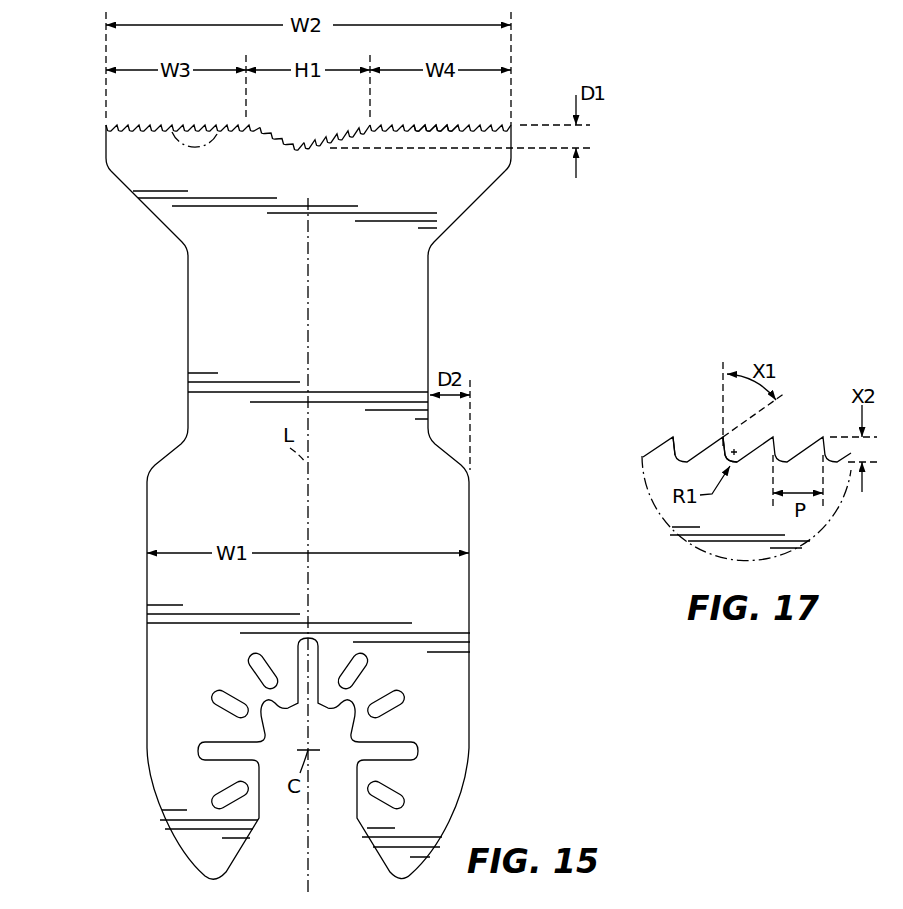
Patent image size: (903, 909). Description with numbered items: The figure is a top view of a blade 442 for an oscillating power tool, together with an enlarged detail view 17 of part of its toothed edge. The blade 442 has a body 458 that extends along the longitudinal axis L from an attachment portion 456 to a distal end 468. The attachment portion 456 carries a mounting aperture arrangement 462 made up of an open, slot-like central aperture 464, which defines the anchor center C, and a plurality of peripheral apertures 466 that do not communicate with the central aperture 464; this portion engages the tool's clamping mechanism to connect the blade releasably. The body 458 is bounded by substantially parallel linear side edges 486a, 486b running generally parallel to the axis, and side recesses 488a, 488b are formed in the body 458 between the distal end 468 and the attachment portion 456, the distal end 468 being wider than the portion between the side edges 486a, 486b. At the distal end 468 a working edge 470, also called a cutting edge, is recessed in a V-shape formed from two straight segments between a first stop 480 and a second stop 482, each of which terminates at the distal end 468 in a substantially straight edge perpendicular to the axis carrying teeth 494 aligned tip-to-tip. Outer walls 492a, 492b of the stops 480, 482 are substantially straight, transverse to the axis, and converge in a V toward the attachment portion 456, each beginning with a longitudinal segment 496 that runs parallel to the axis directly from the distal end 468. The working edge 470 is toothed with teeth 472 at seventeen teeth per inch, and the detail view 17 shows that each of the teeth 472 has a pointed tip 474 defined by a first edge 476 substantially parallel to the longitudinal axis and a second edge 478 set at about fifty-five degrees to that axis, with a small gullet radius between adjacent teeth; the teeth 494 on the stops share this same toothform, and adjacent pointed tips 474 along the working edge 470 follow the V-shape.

In FIG. 15, the blade 442 is at (556, 55).
In FIG. 15, the attachment portion 456 is at (182, 748).
In FIG. 15, the body 458 is at (400, 316).
In FIG. 15, the mounting aperture arrangement 462 is at (418, 715).
In FIG. 15, the central aperture 464 is at (357, 786).
In FIG. 15, the peripheral apertures 466 is at (228, 698).
In FIG. 15, the distal end 468 is at (100, 117).
In FIG. 15, the working edge 470 is at (345, 140).
In FIG. 15, the teeth 472 is at (283, 140).
In FIG. 17, the teeth 472 is at (662, 451).
In FIG. 17, the pointed tip 474 is at (680, 436).
In FIG. 17, the first edge 476 is at (733, 447).
In FIG. 17, the second edge 478 is at (718, 440).
In FIG. 15, the first stop 480 is at (175, 163).
In FIG. 15, the second stop 482 is at (457, 157).
In FIG. 15, the first side edge 486a is at (145, 527).
In FIG. 15, the second side edge 486b is at (470, 527).
In FIG. 15, the first side recess 488a is at (181, 323).
In FIG. 15, the second side recess 488b is at (437, 323).
In FIG. 15, the outer wall of first stop 492a is at (150, 203).
In FIG. 15, the outer wall of second stop 492b is at (470, 205).
In FIG. 15, the teeth 494 is at (439, 126).
In FIG. 15, the longitudinal segment 496 is at (106, 138).
In FIG. 15, the section line for FIG. 17 is at (222, 121).